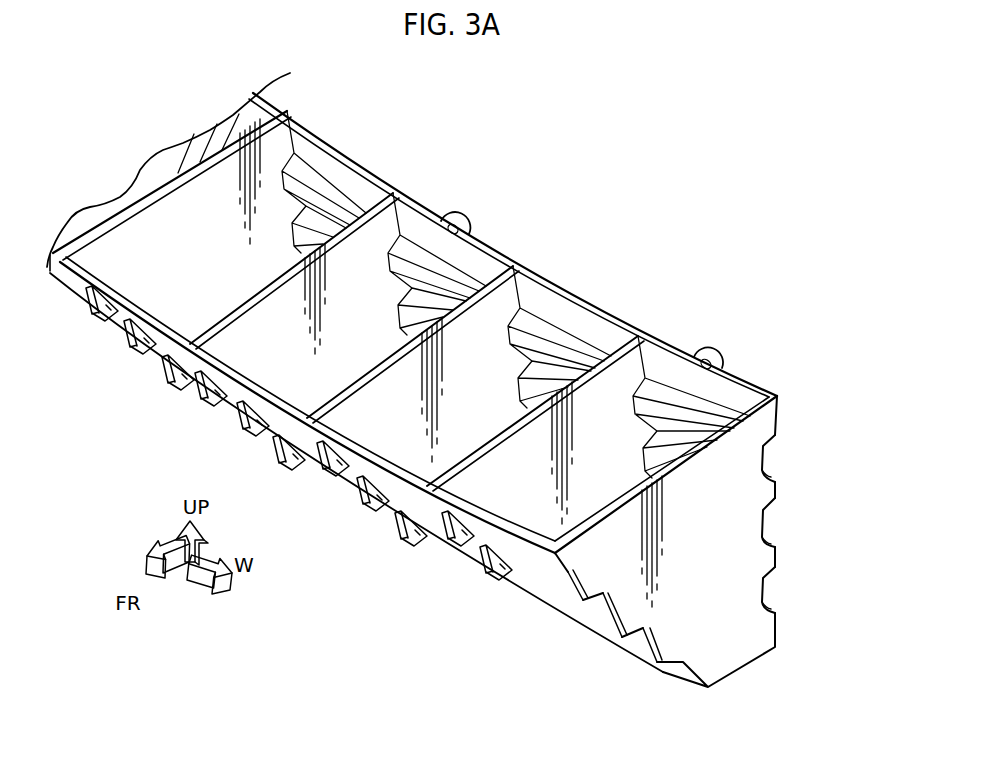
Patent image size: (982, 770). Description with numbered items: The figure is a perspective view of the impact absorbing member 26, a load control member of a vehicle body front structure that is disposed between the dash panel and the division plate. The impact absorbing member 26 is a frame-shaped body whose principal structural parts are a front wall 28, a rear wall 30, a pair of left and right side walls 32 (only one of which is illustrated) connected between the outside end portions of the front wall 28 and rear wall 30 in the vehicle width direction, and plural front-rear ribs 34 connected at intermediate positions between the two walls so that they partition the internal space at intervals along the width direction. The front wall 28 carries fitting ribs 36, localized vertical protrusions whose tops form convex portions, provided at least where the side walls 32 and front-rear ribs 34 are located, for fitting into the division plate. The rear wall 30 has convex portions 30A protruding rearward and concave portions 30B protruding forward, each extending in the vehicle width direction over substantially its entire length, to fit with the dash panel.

The impact absorbing member 26 is at (577, 205).
The front wall 28 is at (440, 540).
The rear wall 30 is at (592, 330).
The convex portions 30A is at (763, 492).
The concave portions 30B is at (323, 197).
The side walls 32 is at (622, 532).
The front-rear ribs 34 is at (275, 317).
The fitting ribs 36 is at (150, 383).